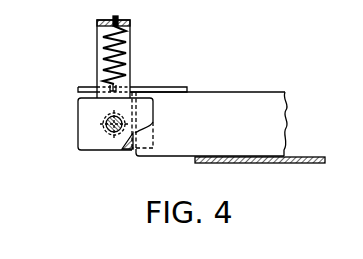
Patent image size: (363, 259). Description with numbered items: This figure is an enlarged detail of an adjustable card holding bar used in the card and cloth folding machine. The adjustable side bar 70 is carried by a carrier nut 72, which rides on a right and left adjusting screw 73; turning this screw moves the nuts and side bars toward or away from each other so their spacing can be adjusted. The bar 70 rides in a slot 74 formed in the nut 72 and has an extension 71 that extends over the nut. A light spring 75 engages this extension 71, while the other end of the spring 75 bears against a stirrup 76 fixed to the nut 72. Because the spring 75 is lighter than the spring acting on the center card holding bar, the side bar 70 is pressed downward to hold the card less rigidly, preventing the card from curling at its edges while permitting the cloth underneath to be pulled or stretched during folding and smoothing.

The adjustable side bar 70 is at (227, 127).
The extension 71 is at (78, 89).
The carrier nut 72 is at (104, 123).
The right and left adjusting screw 73 is at (107, 132).
The slot 74 is at (131, 145).
The light spring 75 is at (108, 42).
The stirrup 76 is at (97, 23).